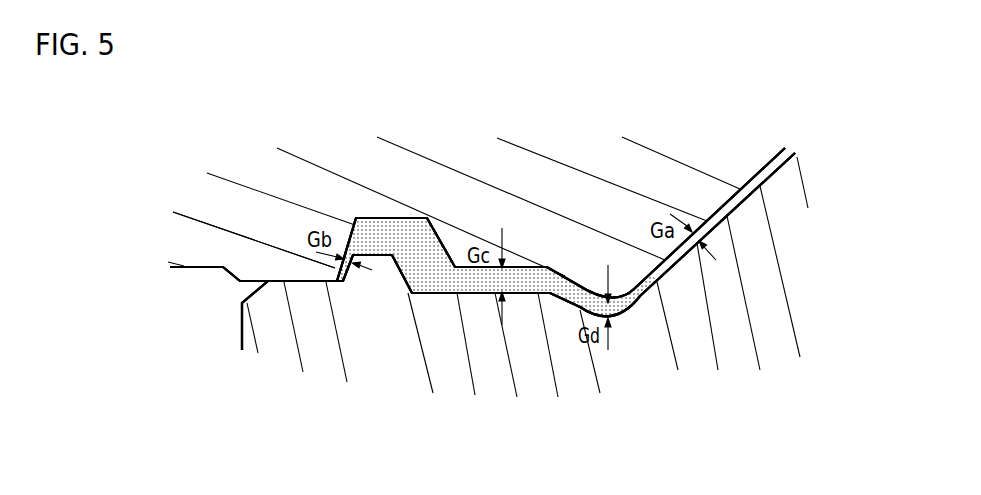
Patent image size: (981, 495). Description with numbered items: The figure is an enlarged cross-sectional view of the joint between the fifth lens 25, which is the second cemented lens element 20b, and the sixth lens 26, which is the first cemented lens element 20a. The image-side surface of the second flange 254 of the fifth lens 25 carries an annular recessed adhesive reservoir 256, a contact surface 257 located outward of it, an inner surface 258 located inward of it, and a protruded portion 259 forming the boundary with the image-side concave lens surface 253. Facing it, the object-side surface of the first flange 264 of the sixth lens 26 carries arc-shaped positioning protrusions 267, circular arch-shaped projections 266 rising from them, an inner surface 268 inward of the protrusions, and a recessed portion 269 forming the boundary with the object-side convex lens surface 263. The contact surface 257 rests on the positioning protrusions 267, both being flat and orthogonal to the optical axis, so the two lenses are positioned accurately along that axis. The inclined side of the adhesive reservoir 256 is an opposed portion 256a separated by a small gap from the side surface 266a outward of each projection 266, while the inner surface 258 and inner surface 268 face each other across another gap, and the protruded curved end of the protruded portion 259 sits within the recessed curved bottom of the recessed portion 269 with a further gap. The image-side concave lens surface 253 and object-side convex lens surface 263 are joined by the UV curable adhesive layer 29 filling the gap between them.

The fifth lens 25 is at (210, 268).
The second cemented lens element 20b is at (419, 235).
The sixth lens 26 is at (240, 328).
The first cemented lens element 20a is at (438, 278).
The adhesive layer 29 is at (440, 236).
The image-side concave lens surface 253 is at (705, 221).
The second flange 254 is at (205, 250).
The adhesive reservoir 256 is at (395, 230).
The opposed portion 256a is at (352, 222).
The contact surface 257 is at (268, 280).
The inner surface 258 is at (520, 278).
The protruded portion 259 is at (581, 284).
The object-side convex lens surface 263 is at (685, 254).
The first flange 264 is at (275, 333).
The projection 266 is at (373, 255).
The side surface 266a is at (343, 283).
The positioning protrusion 267 is at (298, 272).
The inner surface 268 is at (478, 293).
The recessed portion 269 is at (622, 317).